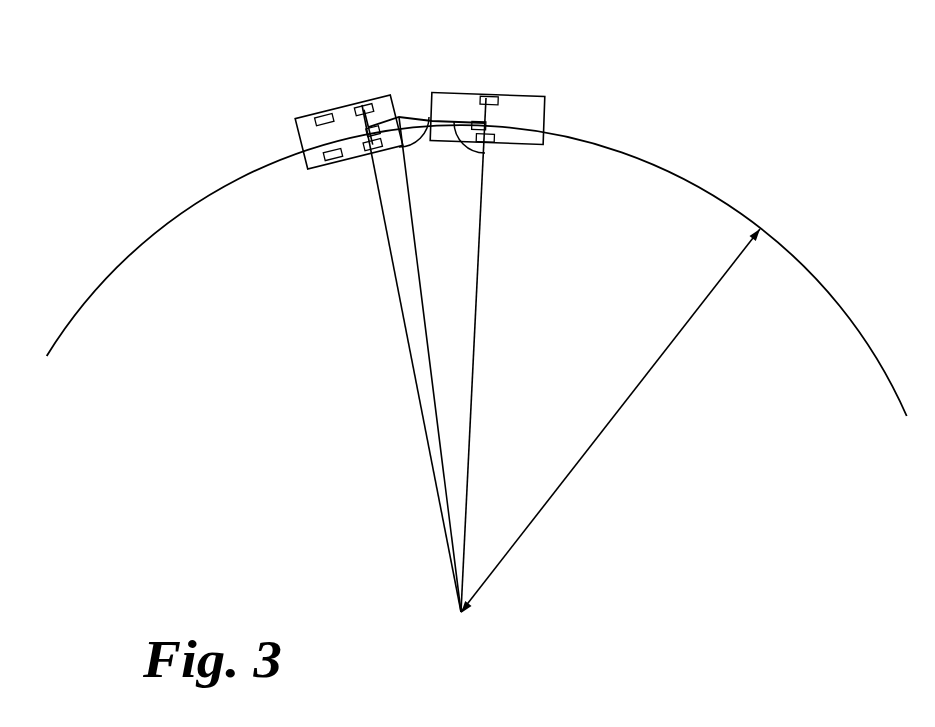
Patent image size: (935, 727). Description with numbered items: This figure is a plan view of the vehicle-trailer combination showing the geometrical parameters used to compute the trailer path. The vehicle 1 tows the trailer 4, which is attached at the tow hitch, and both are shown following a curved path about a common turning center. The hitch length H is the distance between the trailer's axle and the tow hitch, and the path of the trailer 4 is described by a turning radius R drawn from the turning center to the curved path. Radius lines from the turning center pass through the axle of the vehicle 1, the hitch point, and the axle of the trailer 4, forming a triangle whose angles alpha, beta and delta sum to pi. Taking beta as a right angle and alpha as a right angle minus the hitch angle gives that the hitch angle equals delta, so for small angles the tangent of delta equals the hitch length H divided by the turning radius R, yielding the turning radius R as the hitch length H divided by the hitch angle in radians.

The vehicle 1 is at (337, 108).
The trailer 4 is at (510, 94).
The hitch length H is at (426, 354).
The turning radius R is at (610, 421).